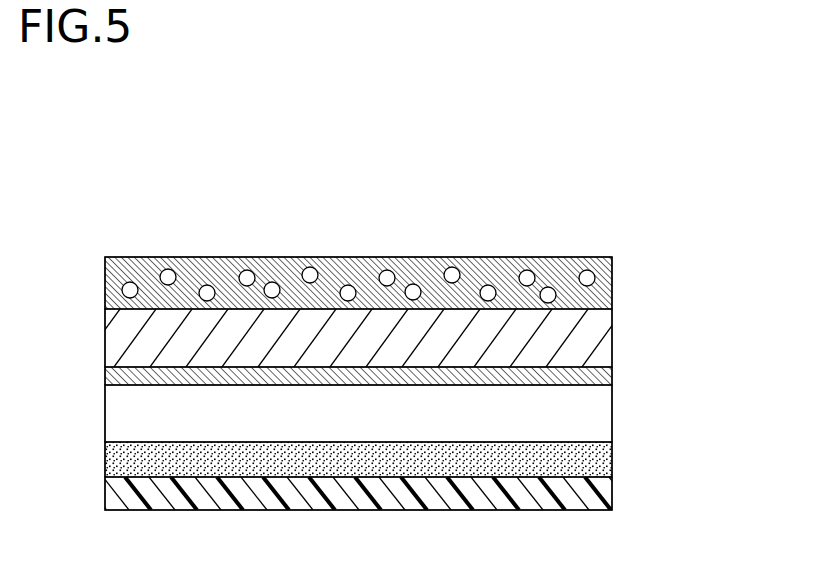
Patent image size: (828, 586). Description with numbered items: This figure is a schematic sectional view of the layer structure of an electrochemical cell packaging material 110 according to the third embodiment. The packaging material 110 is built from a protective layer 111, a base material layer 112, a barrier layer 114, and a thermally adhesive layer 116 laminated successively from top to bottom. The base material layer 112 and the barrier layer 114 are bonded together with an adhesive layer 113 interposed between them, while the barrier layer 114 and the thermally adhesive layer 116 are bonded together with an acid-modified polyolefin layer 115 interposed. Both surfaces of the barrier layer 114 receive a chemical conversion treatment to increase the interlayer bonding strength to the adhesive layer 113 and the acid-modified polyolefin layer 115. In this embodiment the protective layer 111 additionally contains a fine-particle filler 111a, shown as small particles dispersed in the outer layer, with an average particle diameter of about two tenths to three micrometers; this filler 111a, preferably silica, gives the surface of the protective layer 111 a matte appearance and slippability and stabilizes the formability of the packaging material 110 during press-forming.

The packaging material 110 is at (96, 243).
The protective layer 111 is at (415, 231).
The fine-particle filler 111a is at (451, 277).
The base material layer 112 is at (600, 322).
The adhesive layer 113 is at (597, 374).
The barrier layer 114 is at (585, 410).
The acid-modified polyolefin layer 115 is at (592, 458).
The thermally adhesive layer 116 is at (590, 498).